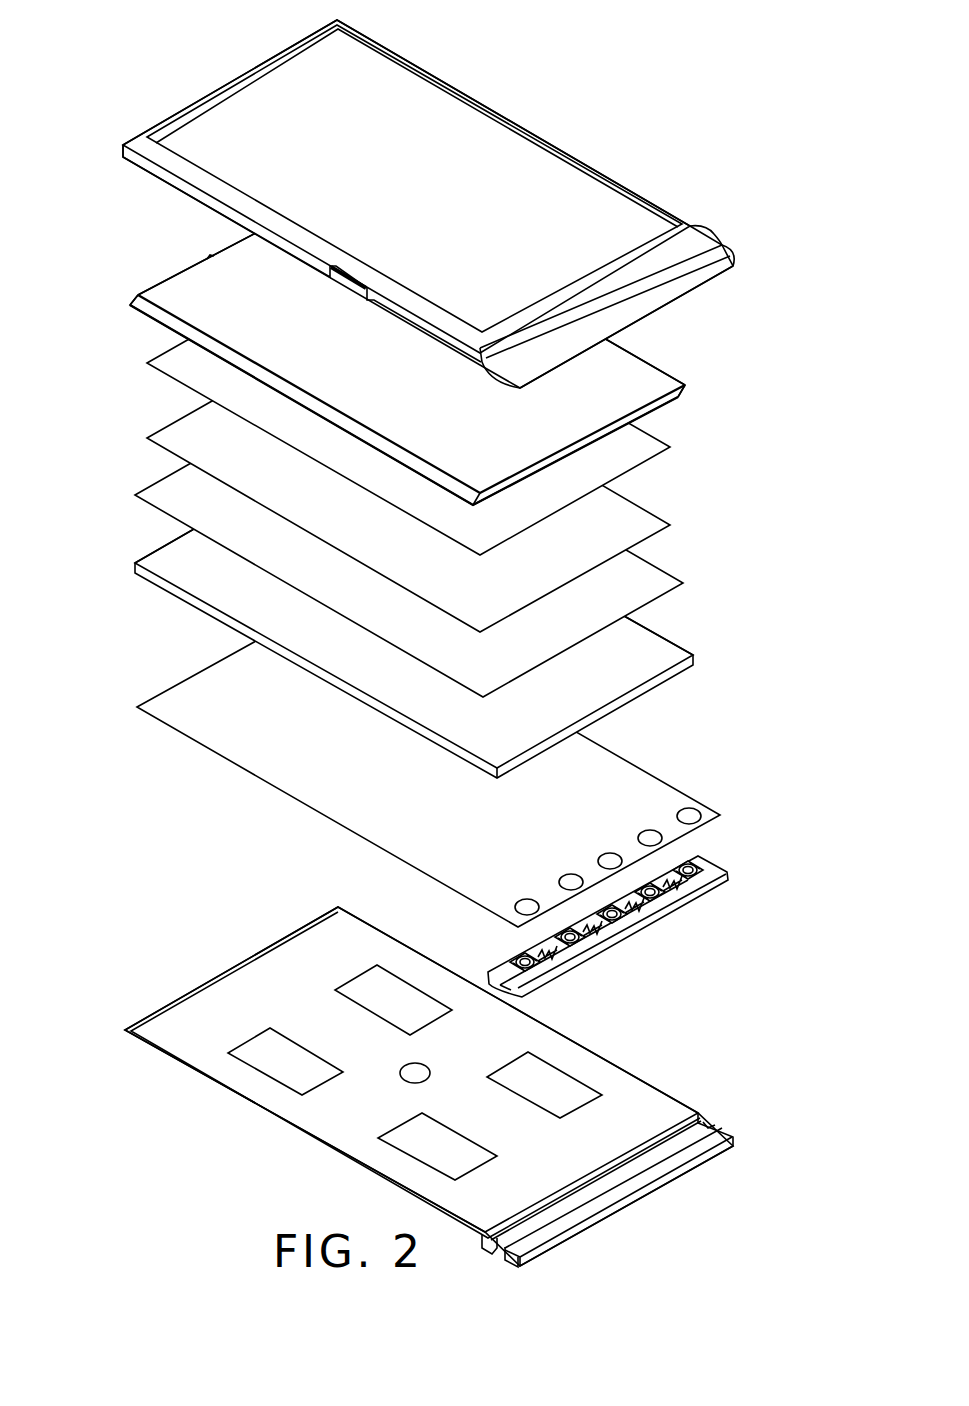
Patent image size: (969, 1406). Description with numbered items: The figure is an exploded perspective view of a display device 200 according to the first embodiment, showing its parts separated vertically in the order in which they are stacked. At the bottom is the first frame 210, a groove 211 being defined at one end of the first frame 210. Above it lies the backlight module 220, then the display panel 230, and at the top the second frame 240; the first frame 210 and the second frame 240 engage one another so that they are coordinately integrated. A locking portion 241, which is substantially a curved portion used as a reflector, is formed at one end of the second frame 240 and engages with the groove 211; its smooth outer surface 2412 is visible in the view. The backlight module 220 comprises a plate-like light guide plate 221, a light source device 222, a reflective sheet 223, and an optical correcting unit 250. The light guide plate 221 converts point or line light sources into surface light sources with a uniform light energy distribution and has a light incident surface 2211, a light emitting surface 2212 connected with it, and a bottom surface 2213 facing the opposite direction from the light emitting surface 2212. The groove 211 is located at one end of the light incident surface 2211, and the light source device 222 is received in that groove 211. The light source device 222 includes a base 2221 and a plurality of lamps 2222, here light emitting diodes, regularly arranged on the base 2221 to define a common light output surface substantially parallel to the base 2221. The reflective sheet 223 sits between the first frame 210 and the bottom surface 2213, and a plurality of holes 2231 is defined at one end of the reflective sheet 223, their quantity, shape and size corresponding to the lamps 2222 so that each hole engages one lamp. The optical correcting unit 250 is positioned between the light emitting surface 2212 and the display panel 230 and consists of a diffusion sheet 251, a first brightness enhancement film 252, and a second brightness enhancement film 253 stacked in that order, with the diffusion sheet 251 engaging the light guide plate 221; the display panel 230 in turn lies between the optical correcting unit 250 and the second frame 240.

The display device 200 is at (472, 643).
The first frame 210 is at (461, 1087).
The groove 211 is at (708, 1137).
The backlight module 220 is at (472, 632).
The light guide plate 221 is at (433, 614).
The light incident surface 2211 is at (615, 703).
The light emitting surface 2212 is at (168, 557).
The bottom surface 2213 is at (208, 618).
The light source device 222 is at (652, 909).
The base 2221 is at (682, 895).
The lamps 2222 is at (535, 966).
The reflective sheet 223 is at (476, 762).
The holes 2231 is at (519, 908).
The display panel 230 is at (635, 375).
The second frame 240 is at (479, 204).
The locking portion 241 is at (648, 278).
The outer surface 2412 is at (700, 247).
The optical correcting unit 250 is at (472, 476).
The diffusion sheet 251 is at (645, 575).
The first brightness enhancement film 252 is at (640, 520).
The second brightness enhancement film 253 is at (650, 445).